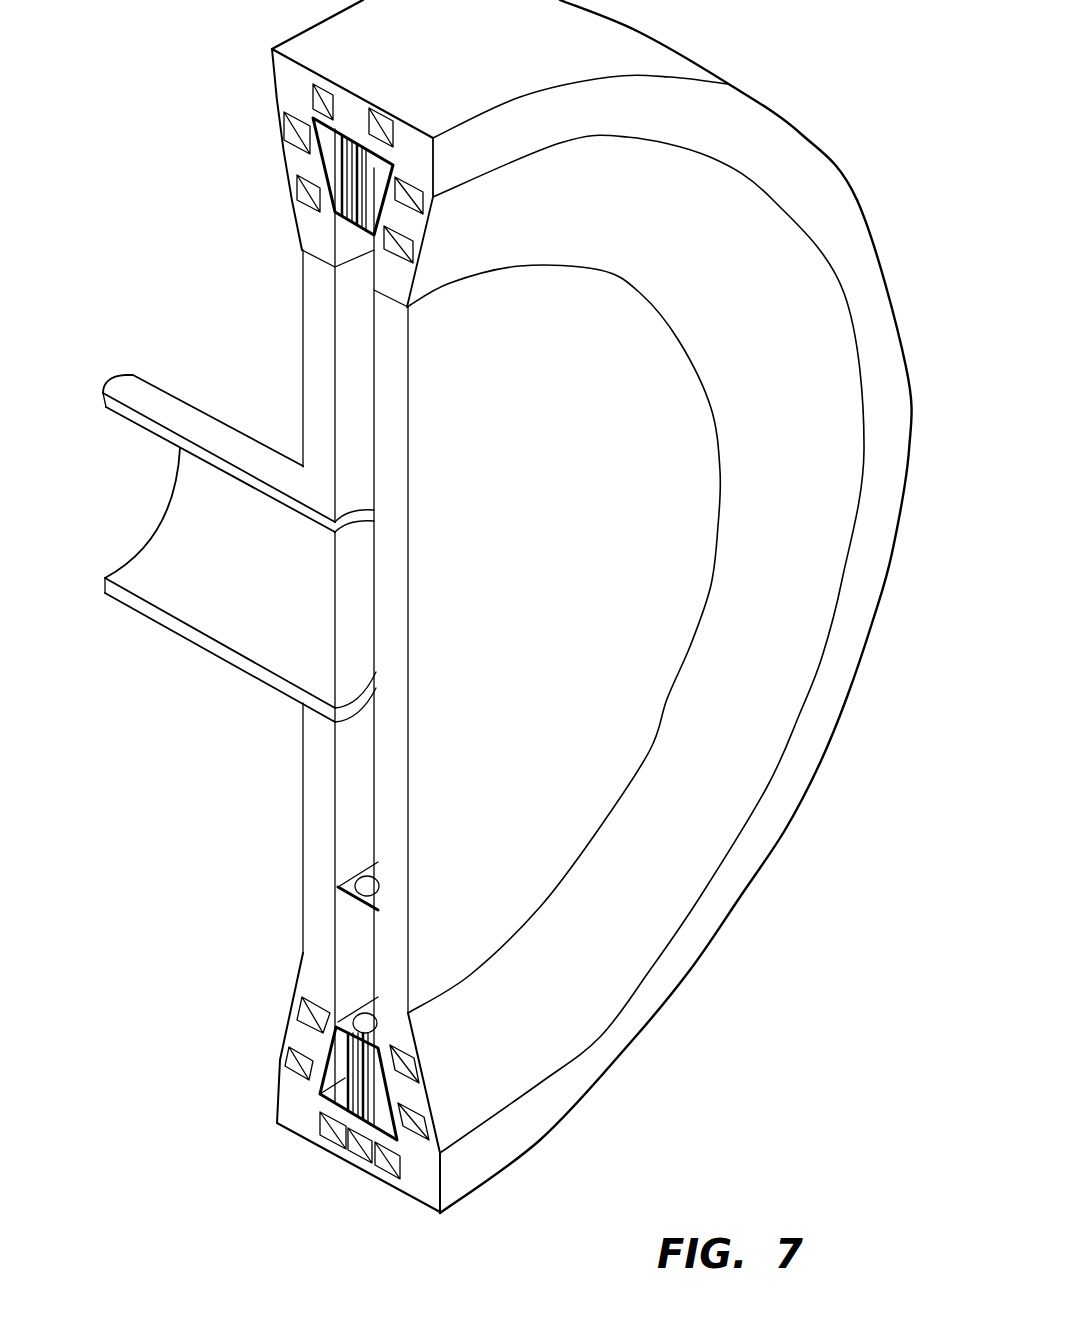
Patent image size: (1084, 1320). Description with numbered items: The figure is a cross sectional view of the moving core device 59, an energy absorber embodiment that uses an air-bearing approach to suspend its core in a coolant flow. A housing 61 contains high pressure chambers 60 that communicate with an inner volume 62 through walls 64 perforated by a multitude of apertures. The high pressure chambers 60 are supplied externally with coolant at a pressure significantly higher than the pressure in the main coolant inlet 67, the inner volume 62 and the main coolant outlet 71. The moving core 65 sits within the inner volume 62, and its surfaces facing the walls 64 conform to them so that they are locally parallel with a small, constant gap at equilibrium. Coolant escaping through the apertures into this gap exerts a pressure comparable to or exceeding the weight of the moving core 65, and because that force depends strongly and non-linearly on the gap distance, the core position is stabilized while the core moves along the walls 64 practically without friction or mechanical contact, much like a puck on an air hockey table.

The moving core device 59 is at (750, 1012).
The high pressure chambers 60 is at (290, 1050).
The housing 61 is at (637, 42).
The inner volume 62 is at (354, 390).
The walls 64 is at (302, 1005).
The moving core 65 is at (380, 1094).
The main coolant inlet 67 is at (151, 556).
The main coolant outlet 71 is at (349, 1160).